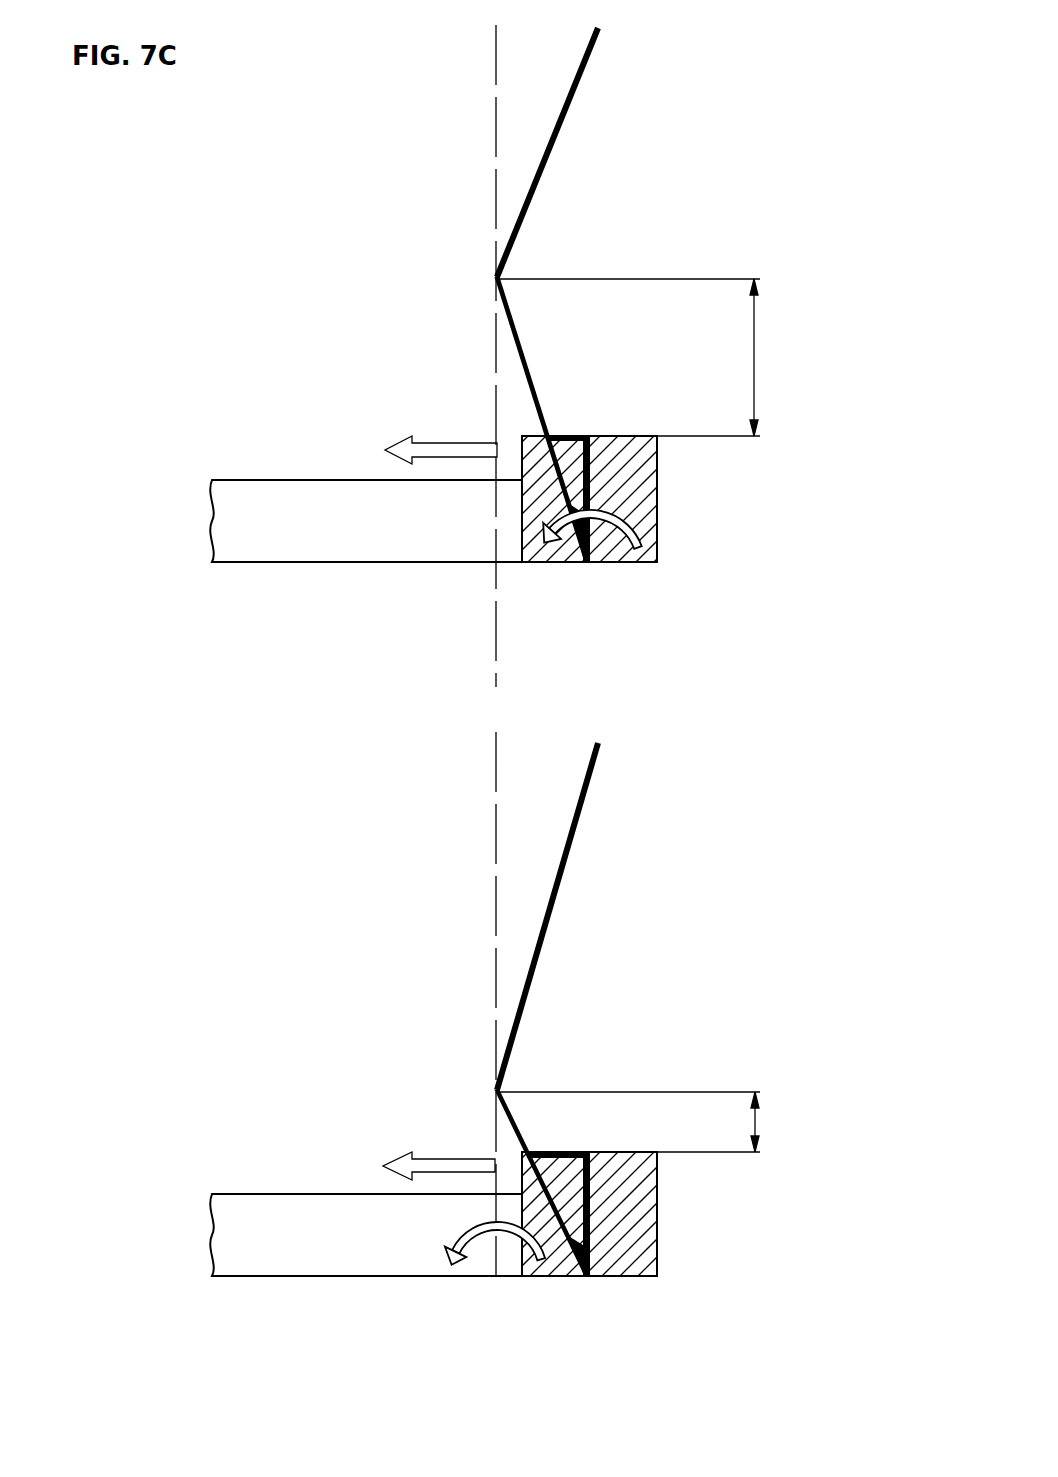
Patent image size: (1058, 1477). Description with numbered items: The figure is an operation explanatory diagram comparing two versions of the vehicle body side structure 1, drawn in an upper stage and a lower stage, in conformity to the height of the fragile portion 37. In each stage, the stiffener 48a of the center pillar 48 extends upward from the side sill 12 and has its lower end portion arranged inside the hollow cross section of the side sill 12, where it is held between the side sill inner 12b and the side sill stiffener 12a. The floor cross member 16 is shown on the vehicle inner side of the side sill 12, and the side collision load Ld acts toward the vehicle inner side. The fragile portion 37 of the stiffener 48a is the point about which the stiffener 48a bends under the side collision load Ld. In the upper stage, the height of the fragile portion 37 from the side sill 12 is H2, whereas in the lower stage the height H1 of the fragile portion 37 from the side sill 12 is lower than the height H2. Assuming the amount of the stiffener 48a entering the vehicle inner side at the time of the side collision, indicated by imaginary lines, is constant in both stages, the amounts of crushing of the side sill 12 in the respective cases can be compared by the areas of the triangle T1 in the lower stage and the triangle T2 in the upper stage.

The vehicle body side structure 1 is at (430, 98).
The center pillar 48 is at (593, 152).
The stiffener 48a is at (572, 108).
The fragile portion 37 is at (495, 278).
The floor cross member 16 is at (294, 479).
The side sill 12 is at (591, 480).
The side sill stiffener 12a is at (505, 618).
The side sill inner 12b is at (548, 564).
The height of the fragile portion H1 is at (732, 1122).
The height of the fragile portion H2 is at (732, 357).
The triangle T1 is at (590, 1193).
The triangle T2 is at (590, 482).
The side collision load Ld is at (455, 440).